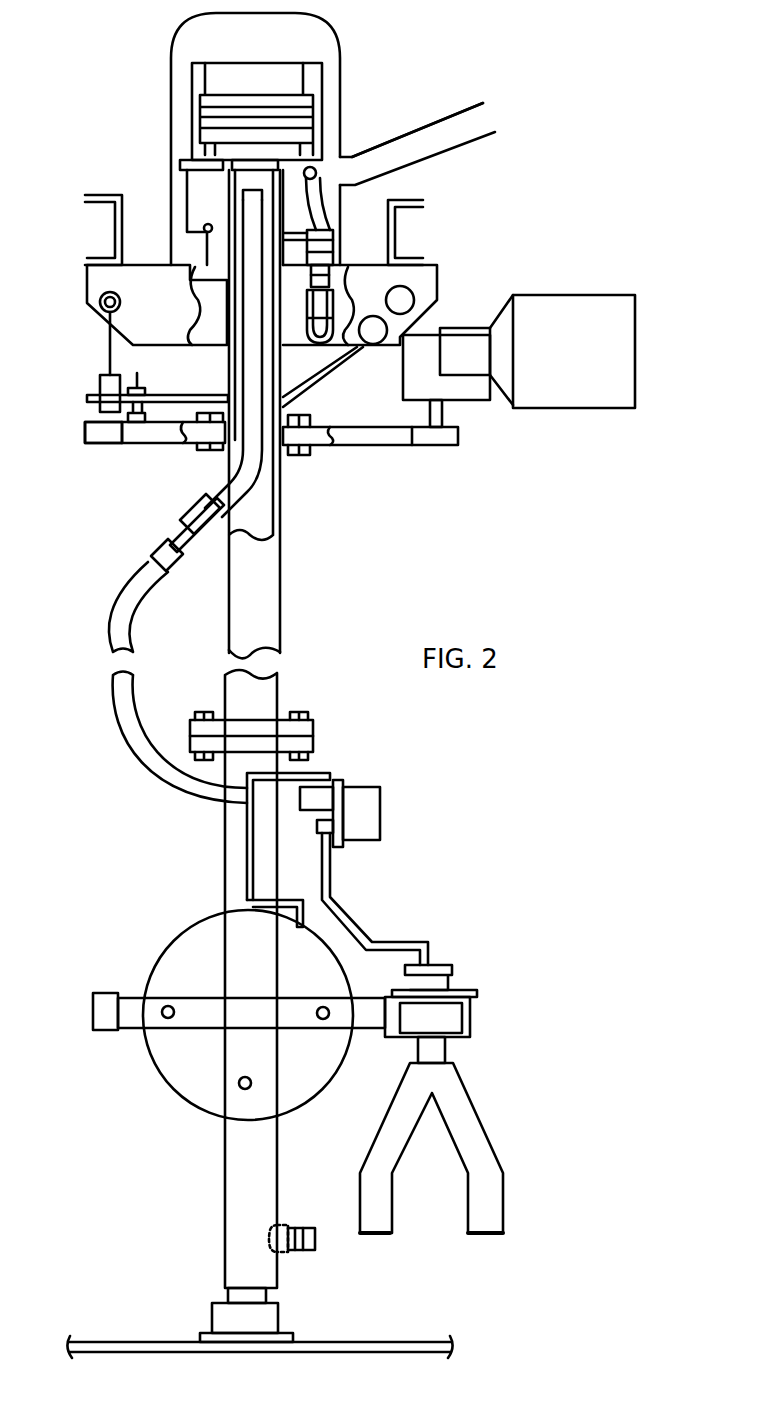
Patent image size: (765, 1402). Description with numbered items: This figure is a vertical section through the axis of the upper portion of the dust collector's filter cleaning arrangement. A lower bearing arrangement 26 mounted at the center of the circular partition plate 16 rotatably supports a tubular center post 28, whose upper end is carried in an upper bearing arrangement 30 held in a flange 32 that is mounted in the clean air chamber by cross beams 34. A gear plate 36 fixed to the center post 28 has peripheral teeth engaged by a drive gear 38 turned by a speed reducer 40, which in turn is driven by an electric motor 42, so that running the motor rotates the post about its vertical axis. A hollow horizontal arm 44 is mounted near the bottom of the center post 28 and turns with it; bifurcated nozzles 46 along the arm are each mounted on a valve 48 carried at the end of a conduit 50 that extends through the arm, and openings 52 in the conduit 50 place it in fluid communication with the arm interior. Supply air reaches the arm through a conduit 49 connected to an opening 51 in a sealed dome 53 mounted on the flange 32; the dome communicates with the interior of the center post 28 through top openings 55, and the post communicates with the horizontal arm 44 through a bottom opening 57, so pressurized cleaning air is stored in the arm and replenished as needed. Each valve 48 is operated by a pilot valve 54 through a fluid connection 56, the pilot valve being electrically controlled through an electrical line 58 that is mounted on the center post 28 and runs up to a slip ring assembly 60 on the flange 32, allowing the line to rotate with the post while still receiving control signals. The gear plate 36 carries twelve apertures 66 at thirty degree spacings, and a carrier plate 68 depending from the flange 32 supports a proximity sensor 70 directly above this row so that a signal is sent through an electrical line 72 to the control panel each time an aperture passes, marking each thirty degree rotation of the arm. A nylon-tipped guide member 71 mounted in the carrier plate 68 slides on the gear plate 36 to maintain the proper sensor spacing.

The circular partition plate 16 is at (408, 1342).
The lower bearing arrangement 26 is at (270, 1320).
The tubular center post 28 is at (263, 1180).
The upper bearing arrangement 30 is at (335, 248).
The flange 32 is at (426, 290).
The cross beams 34 is at (85, 195).
The gear plate 36 is at (140, 444).
The drive gear 38 is at (433, 446).
The speed reducer 40 is at (467, 388).
The electric motor 42 is at (592, 397).
The horizontal arm 44 is at (168, 946).
The nozzle 46 is at (506, 1097).
The valve 48 is at (462, 1025).
The conduit 49 is at (500, 86).
The conduit 50 is at (118, 1020).
The opening 51 is at (376, 136).
The openings 52 is at (174, 1017).
The sealed dome 53 is at (341, 86).
The pilot valve 54 is at (380, 823).
The top openings 55 is at (228, 215).
The fluid connection 56 is at (349, 913).
The bottom opening 57 is at (252, 1085).
The electrical line 58 is at (250, 478).
The slip ring assembly 60 is at (305, 130).
The apertures 66 is at (108, 444).
The carrier plate 68 is at (228, 400).
The proximity sensor 70 is at (99, 385).
The guide member 71 is at (138, 378).
The electrical line 72 is at (107, 343).